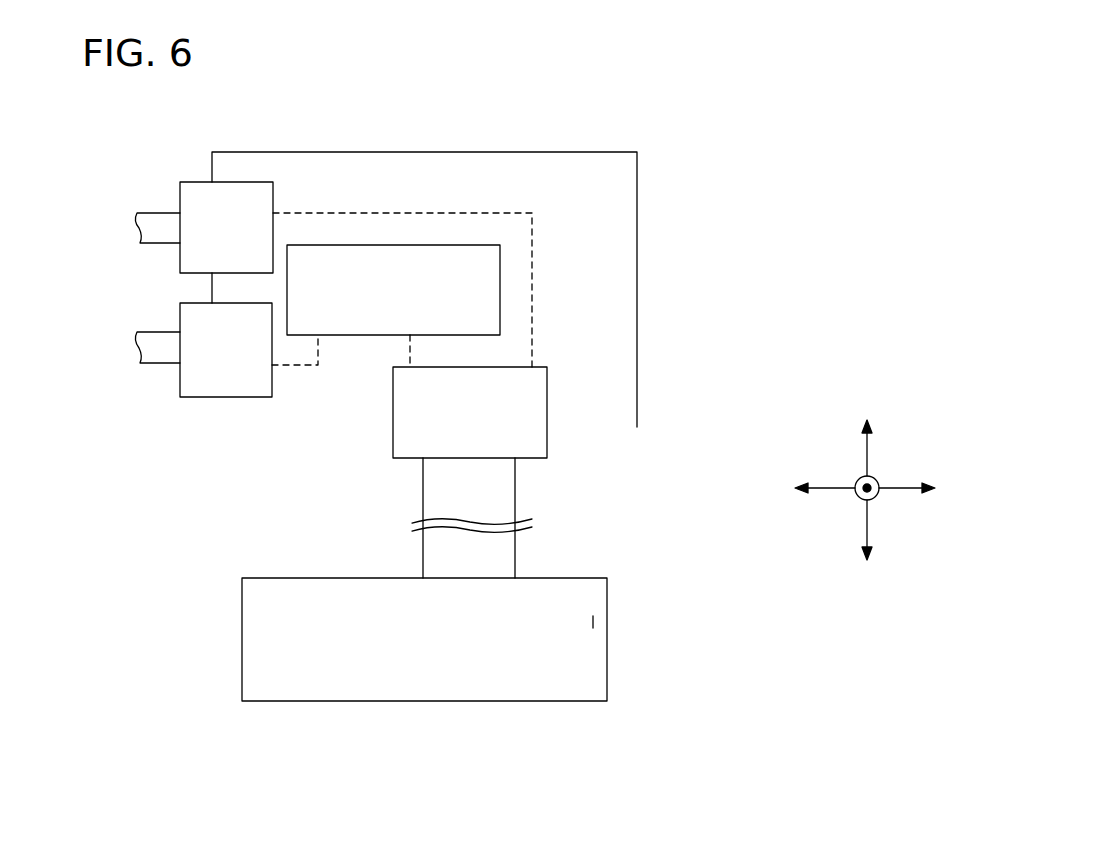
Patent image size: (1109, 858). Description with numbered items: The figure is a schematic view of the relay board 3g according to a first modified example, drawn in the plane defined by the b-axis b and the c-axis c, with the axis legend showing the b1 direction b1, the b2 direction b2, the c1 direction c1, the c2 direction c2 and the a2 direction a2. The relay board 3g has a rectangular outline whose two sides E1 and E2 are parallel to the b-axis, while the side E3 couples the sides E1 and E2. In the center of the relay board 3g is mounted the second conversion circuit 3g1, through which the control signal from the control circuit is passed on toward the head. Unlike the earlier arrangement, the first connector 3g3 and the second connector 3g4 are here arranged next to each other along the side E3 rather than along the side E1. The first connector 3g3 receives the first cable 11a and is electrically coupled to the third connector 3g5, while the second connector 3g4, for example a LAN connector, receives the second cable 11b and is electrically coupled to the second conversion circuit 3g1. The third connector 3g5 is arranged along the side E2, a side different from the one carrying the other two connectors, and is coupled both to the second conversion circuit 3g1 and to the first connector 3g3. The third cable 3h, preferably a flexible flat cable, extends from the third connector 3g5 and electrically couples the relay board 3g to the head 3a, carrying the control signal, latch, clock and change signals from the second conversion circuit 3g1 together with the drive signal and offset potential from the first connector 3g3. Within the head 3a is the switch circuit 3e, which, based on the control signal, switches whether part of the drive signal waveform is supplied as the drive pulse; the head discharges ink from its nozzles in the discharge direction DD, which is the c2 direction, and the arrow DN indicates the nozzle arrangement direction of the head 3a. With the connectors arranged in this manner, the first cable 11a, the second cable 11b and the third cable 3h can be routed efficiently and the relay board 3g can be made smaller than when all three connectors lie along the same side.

The relay board 3g is at (637, 308).
The first connector 3g3 is at (255, 182).
The second connector 3g4 is at (255, 397).
The second conversion circuit 3g1 is at (358, 335).
The third connector 3g5 is at (547, 398).
The first cable 11a is at (167, 213).
The second cable 11b is at (163, 363).
The third cable 3h is at (515, 500).
The head 3a is at (607, 672).
The switch circuit 3e is at (593, 622).
The side E1 is at (637, 152).
The side E2 is at (547, 427).
The side E3 is at (393, 425).
The discharge direction DD is at (164, 587).
The width direction DN is at (482, 730).
The c1 direction c1 is at (865, 396).
The c2 direction c2 is at (865, 586).
The b1 direction b1 is at (957, 491).
The b2 direction b2 is at (772, 491).
The a2 direction a2 is at (840, 520).
The b-axis b is at (903, 488).
The c-axis c is at (867, 450).